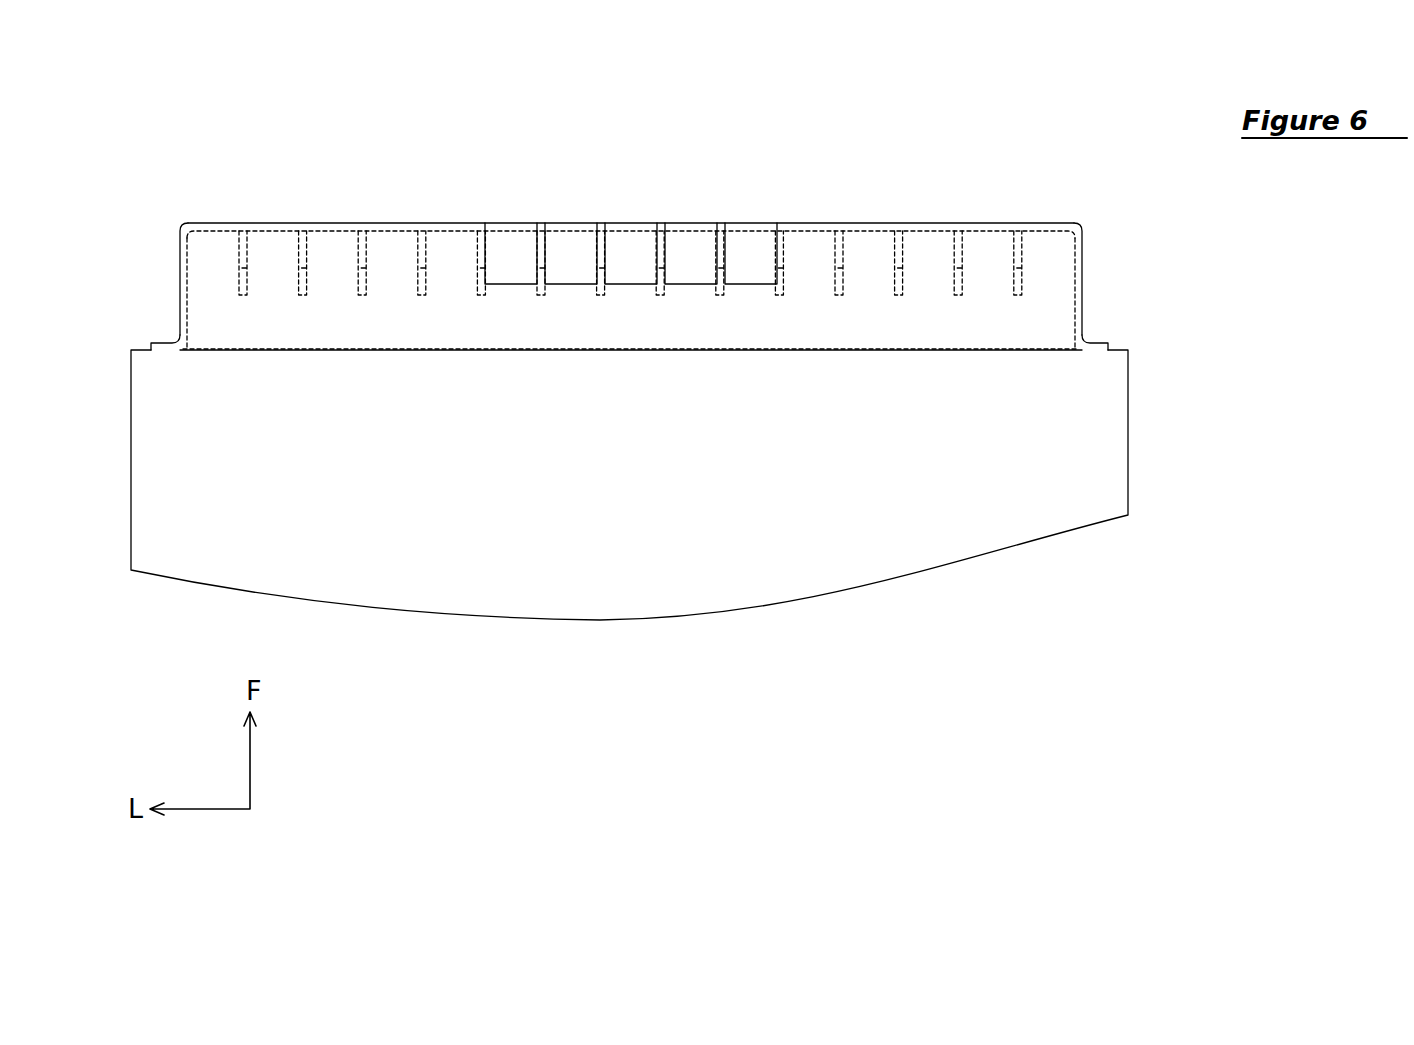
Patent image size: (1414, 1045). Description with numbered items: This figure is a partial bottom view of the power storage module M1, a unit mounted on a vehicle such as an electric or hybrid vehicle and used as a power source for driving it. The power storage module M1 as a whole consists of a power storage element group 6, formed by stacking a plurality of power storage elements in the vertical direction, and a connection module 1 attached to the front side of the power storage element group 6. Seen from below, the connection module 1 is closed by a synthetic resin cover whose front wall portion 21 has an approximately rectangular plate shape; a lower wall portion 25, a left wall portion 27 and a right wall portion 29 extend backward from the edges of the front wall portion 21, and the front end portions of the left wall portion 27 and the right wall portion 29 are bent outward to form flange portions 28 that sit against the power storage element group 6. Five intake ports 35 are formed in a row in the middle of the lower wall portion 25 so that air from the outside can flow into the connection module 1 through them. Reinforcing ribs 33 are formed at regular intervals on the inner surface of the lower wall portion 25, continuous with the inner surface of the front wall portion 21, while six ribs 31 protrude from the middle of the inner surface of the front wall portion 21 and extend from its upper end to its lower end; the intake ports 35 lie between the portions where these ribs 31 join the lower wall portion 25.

The power storage module M1 is at (201, 98).
The connection module 1 is at (1232, 296).
The power storage element group 6 is at (1075, 482).
The front wall portion 21 is at (867, 227).
The lower wall portion 25 is at (928, 323).
The left wall portion 27 is at (182, 258).
The flange portions 28 is at (165, 345).
The right wall portion 29 is at (1082, 258).
The ribs 31 is at (543, 258).
The reinforcing ribs 33 is at (960, 255).
The intake ports 35 is at (745, 260).